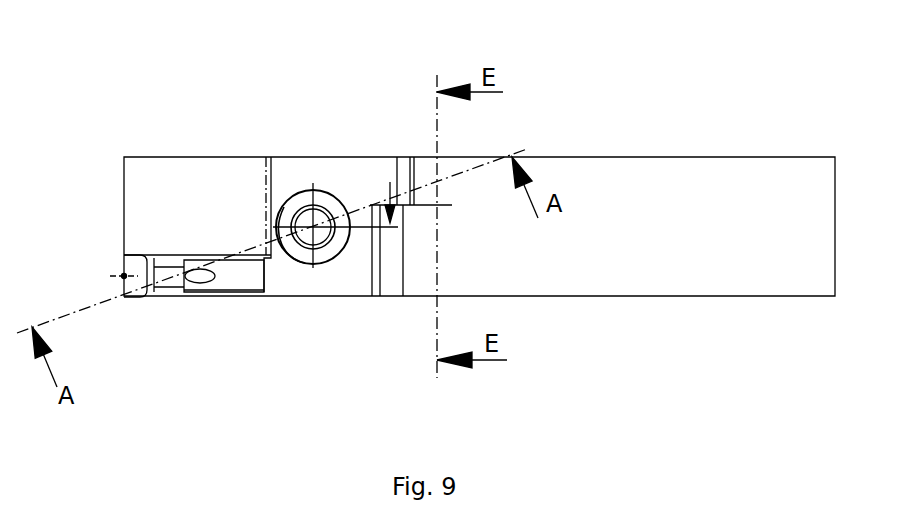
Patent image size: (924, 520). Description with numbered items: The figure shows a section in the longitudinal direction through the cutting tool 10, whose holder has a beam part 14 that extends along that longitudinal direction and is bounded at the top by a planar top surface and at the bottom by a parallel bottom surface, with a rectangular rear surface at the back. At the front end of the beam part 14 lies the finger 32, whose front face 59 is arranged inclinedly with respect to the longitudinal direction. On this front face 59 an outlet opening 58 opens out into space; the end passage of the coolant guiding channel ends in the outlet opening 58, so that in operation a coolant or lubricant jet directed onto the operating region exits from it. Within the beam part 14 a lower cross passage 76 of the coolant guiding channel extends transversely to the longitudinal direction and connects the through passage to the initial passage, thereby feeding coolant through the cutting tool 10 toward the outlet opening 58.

The cutting tool 10 is at (591, 64).
The beam part 14 is at (713, 295).
The outlet opening 58 is at (197, 273).
The front face 59 is at (231, 303).
The bottom finger 32 is at (222, 280).
The lower cross passage 76 is at (402, 182).